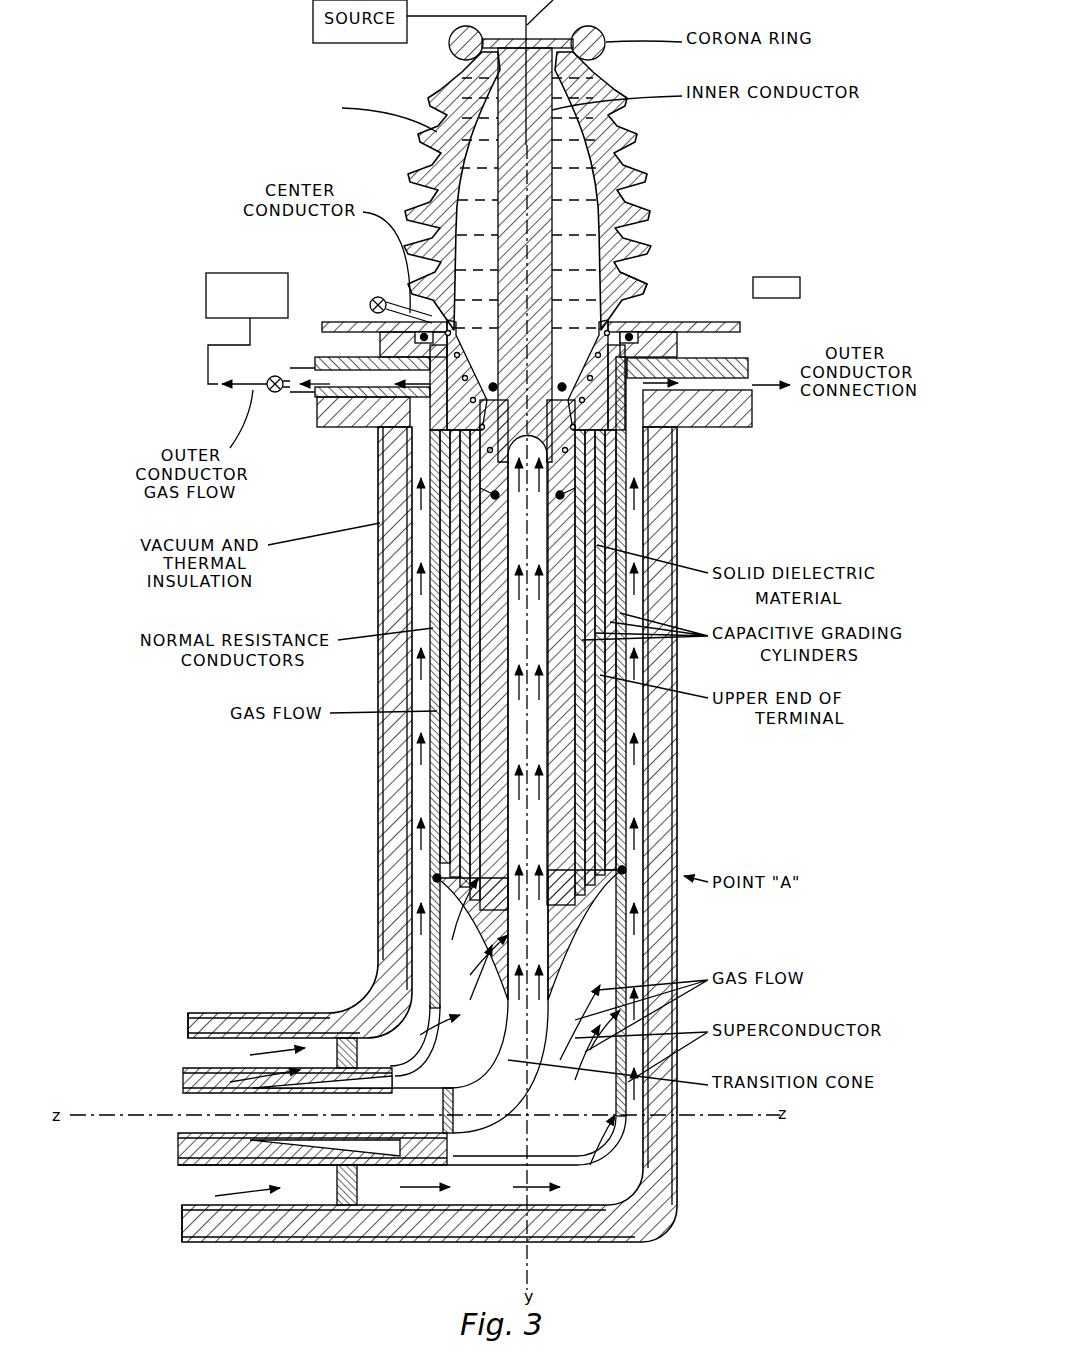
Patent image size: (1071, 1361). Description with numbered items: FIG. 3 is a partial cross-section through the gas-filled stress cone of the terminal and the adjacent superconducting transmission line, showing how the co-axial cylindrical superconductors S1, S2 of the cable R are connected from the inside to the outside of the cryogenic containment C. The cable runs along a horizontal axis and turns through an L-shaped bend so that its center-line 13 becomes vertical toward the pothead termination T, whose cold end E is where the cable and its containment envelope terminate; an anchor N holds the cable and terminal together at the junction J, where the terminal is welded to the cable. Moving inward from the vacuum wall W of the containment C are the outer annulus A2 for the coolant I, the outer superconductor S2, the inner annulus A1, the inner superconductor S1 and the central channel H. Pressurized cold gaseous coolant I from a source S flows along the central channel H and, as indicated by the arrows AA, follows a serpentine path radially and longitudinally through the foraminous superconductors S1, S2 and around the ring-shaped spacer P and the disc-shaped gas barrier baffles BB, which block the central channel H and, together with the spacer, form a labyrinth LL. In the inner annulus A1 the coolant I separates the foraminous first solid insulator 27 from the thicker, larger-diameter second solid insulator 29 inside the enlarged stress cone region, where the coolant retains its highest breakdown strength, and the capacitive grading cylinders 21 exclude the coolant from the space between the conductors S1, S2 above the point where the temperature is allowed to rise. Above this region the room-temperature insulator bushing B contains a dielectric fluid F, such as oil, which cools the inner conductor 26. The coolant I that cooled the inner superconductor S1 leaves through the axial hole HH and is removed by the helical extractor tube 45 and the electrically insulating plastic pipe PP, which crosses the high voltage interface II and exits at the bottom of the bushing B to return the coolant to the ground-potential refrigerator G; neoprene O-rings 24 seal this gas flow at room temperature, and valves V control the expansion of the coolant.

The inner conductor 26 is at (590, 246).
The insulator bushing B is at (625, 178).
The dielectric fluid F is at (578, 200).
The pothead termination T is at (640, 236).
The O-rings 24 is at (632, 332).
The high voltage interface II is at (650, 300).
The helical extractor tube 45 is at (577, 318).
The ground-potential refrigerator G is at (700, 304).
The source S is at (290, 296).
The valves V is at (277, 418).
The plastic pipe PP is at (462, 330).
The axial hole HH is at (566, 486).
The cryogenic coolant I is at (526, 531).
The outer superconductor S2 is at (437, 1017).
The cable R is at (682, 1186).
The joint J is at (262, 1244).
The outer annulus A2 is at (420, 858).
The inner superconductor S1 is at (507, 1000).
The containment C is at (392, 800).
The second solid insulator 29 is at (612, 758).
The capacitive grading cylinders 21 is at (640, 782).
The gas barrier baffles BB is at (453, 1117).
The center-line 13 is at (168, 1117).
The labyrinth LL is at (330, 1006).
The vacuum wall W is at (210, 1035).
The first solid insulator 27 is at (305, 1082).
The central channel H is at (276, 1124).
The spacer P is at (405, 1150).
The anchor N is at (335, 1198).
The cold end E is at (527, 1250).
The inner annulus A1 is at (472, 1041).
The arrows AA is at (548, 1020).